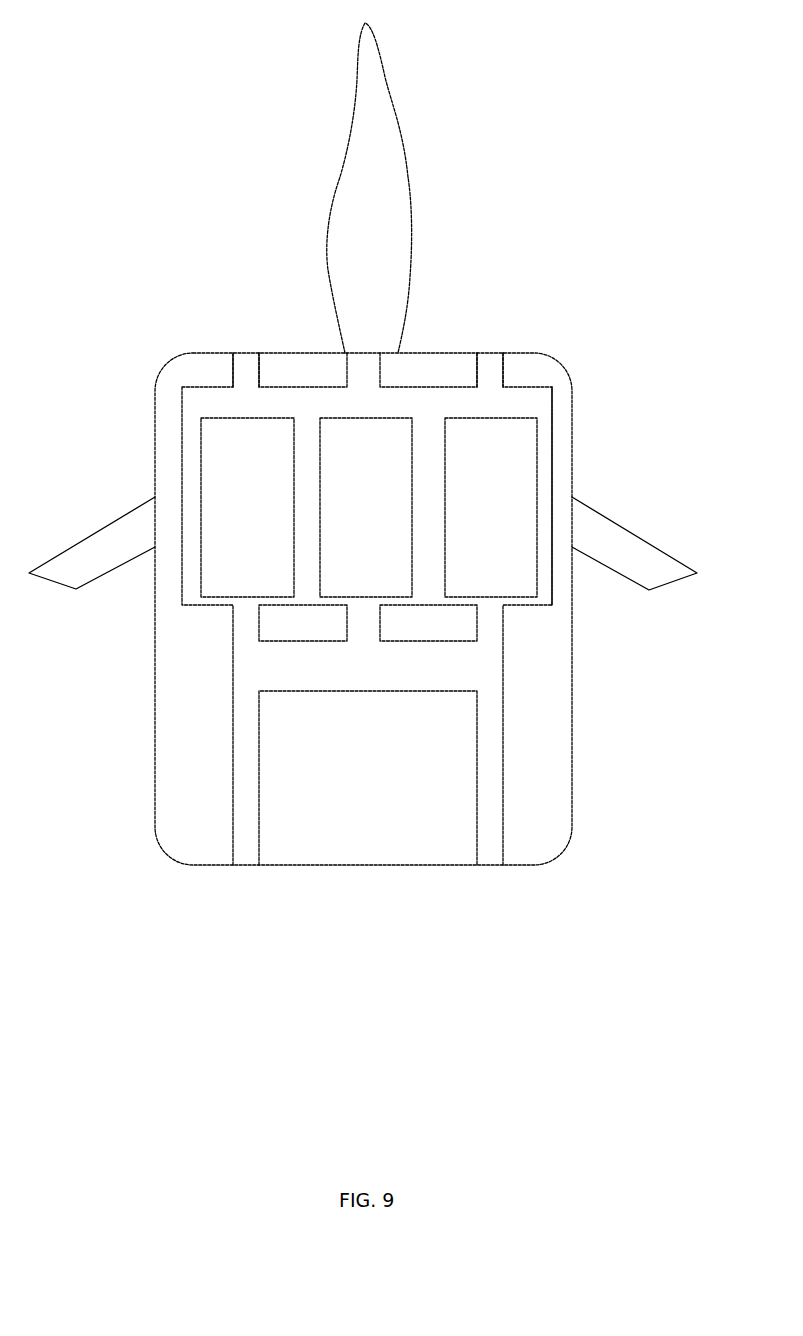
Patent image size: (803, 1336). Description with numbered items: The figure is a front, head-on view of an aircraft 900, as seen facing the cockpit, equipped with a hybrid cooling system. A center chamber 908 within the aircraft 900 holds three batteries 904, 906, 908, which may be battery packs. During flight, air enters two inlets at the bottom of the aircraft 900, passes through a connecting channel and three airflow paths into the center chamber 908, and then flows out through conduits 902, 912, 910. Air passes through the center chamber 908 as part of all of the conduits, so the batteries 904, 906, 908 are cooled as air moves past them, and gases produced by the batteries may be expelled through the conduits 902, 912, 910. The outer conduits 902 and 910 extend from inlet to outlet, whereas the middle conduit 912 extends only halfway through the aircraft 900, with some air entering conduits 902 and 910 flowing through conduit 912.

The aircraft 900 is at (155, 760).
The conduit 902 is at (237, 370).
The battery 904 is at (277, 442).
The battery 906 is at (398, 442).
The center chamber 908 is at (513, 442).
The conduit 910 is at (503, 372).
The conduit 912 is at (403, 363).